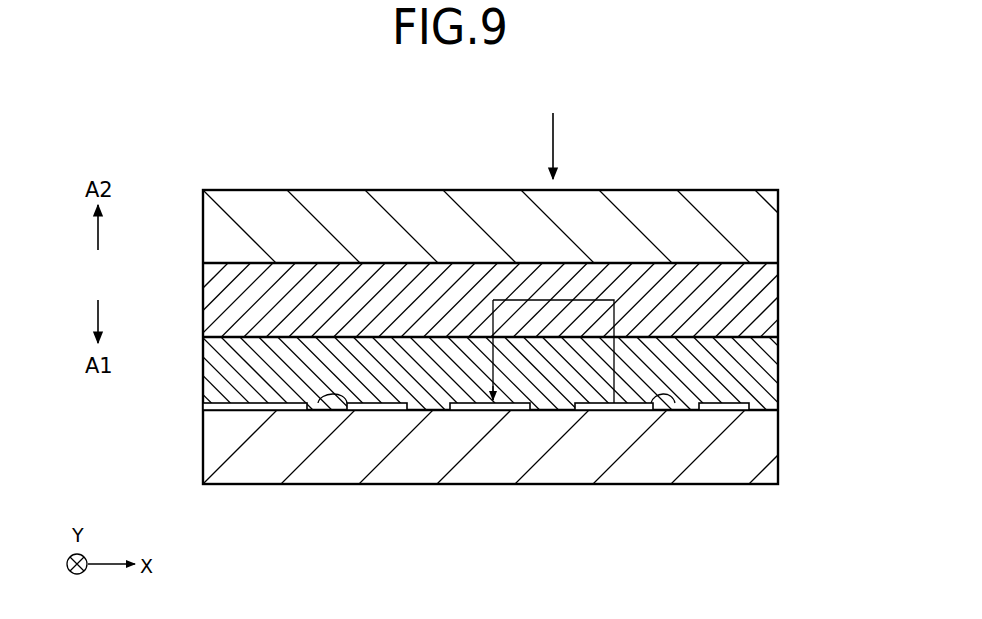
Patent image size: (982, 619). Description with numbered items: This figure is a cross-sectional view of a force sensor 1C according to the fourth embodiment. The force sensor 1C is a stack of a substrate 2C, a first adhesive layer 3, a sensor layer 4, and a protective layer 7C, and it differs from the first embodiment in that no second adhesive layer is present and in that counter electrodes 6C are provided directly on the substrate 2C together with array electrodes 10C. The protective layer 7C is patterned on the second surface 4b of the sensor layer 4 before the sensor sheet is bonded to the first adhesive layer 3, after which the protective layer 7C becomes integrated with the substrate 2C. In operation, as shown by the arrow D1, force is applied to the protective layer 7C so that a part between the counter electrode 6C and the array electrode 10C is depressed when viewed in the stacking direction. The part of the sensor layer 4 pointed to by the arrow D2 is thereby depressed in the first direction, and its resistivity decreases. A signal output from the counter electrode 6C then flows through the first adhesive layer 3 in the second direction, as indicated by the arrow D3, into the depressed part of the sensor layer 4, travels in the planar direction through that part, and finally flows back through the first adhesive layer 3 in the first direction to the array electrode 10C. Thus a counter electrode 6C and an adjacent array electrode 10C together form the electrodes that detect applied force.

The force sensor 1C is at (770, 138).
The protective layer 7C is at (768, 217).
The sensor layer 4 is at (768, 296).
The second surface 4b is at (240, 262).
The first adhesive layer 3 is at (762, 358).
The array electrode 10C is at (218, 405).
The substrate 2C is at (768, 445).
The counter electrode 6C is at (319, 404).
The arrow indicating applied force D1 is at (553, 130).
The arrow indicating depressed part of sensor layer D2 is at (589, 288).
The arrow indicating signal flow D3 is at (529, 300).